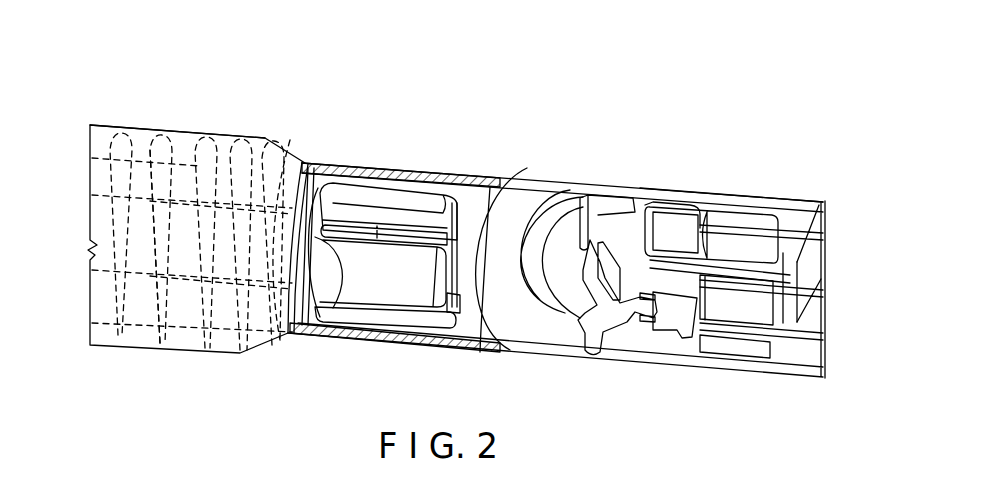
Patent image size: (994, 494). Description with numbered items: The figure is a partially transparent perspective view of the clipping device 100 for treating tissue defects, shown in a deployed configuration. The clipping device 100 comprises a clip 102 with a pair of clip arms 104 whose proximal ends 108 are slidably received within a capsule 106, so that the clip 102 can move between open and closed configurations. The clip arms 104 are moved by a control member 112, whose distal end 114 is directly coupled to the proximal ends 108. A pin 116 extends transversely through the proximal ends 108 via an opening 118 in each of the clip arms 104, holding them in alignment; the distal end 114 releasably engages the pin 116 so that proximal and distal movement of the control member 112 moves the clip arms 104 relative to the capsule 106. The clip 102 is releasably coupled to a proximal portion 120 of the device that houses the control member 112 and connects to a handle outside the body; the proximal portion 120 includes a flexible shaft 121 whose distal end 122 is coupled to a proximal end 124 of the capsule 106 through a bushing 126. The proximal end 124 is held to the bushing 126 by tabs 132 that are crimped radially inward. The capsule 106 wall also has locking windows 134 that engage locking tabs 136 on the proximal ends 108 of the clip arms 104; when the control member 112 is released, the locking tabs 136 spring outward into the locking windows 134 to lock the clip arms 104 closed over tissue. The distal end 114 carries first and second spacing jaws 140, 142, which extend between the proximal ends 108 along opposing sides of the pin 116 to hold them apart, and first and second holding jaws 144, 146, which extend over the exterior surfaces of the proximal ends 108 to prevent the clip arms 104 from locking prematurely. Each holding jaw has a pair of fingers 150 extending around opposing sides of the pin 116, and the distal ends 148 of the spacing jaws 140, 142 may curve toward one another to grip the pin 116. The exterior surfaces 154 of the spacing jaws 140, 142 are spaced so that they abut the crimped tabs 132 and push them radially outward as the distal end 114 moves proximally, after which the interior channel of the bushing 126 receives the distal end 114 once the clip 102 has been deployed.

The clipping device 100 is at (432, 108).
The clip 102 is at (718, 145).
The clip arms 104 is at (820, 320).
The capsule 106 is at (803, 200).
The proximal ends 108 is at (690, 277).
The control member 112 is at (144, 258).
The distal end 114 is at (313, 185).
The pin 116 is at (748, 238).
The opening 118 is at (787, 323).
The proximal portion 120 is at (178, 90).
The flexible shaft 121 is at (100, 125).
The distal end 122 is at (268, 140).
The proximal end 124 is at (632, 200).
The bushing 126 is at (535, 195).
The tabs 132 is at (593, 307).
The locking windows 134 is at (653, 203).
The locking tabs 136 is at (670, 343).
The first spacing jaw 140 is at (378, 290).
The second spacing jaw 142 is at (460, 200).
The first holding jaw 144 is at (353, 198).
The second holding jaw 146 is at (333, 335).
The distal ends 148 is at (490, 187).
The fingers 150 is at (417, 197).
The exterior surfaces 154 is at (300, 335).